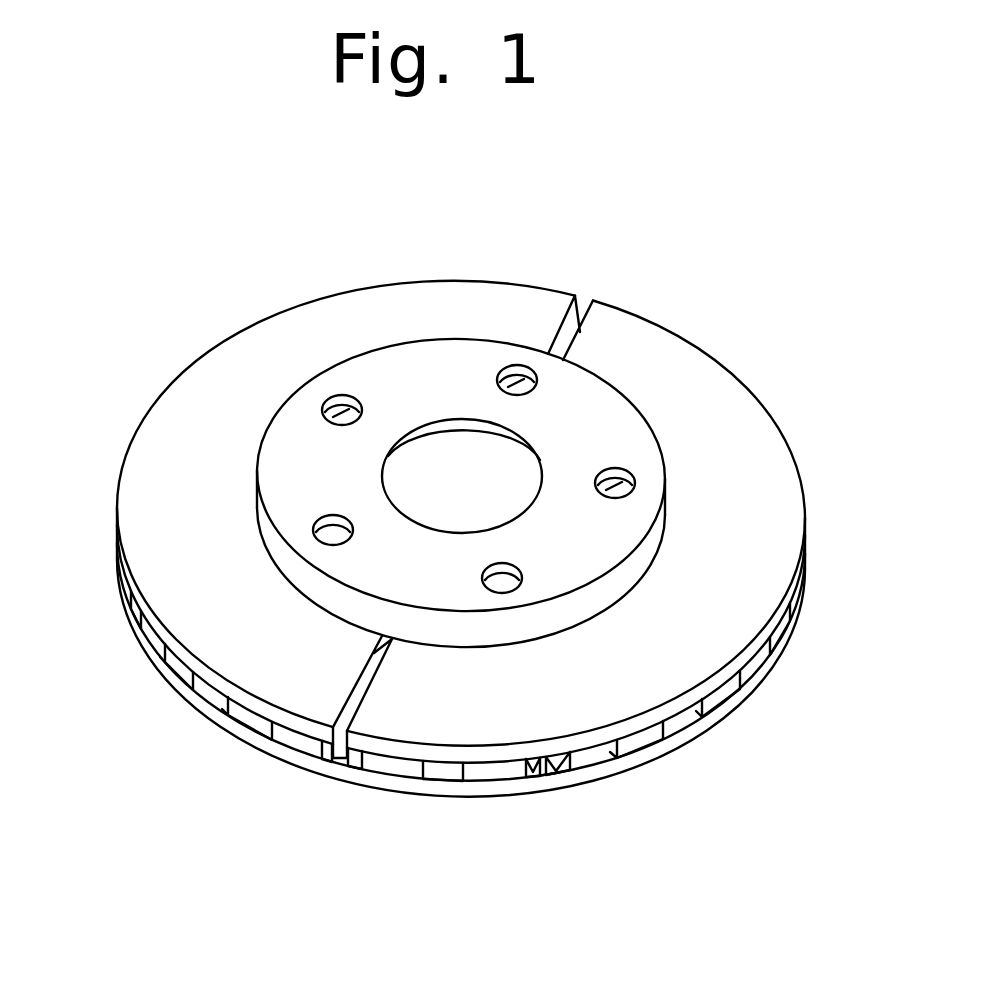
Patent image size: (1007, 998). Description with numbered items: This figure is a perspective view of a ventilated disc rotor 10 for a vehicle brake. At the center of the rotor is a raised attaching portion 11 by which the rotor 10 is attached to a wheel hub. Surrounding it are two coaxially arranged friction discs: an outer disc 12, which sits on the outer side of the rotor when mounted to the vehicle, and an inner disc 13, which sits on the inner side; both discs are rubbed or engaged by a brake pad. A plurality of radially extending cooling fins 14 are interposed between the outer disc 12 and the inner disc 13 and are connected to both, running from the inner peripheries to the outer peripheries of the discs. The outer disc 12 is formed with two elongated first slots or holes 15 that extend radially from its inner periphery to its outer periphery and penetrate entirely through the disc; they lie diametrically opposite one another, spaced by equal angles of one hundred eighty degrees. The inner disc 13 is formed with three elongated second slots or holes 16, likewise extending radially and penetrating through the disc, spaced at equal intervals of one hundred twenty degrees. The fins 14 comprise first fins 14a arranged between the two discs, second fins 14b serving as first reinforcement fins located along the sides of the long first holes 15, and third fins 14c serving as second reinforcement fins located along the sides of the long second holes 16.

The disc rotor 10 is at (738, 357).
The attaching portion 11 is at (272, 477).
The outer disc 12 is at (778, 480).
The inner disc 13 is at (248, 738).
The cooling fins 14 is at (575, 887).
The first fins 14a is at (443, 770).
The second fins 14b is at (330, 760).
The third fins 14c is at (535, 763).
The first slots or holes 15 is at (563, 336).
The second slots or holes 16 is at (545, 787).